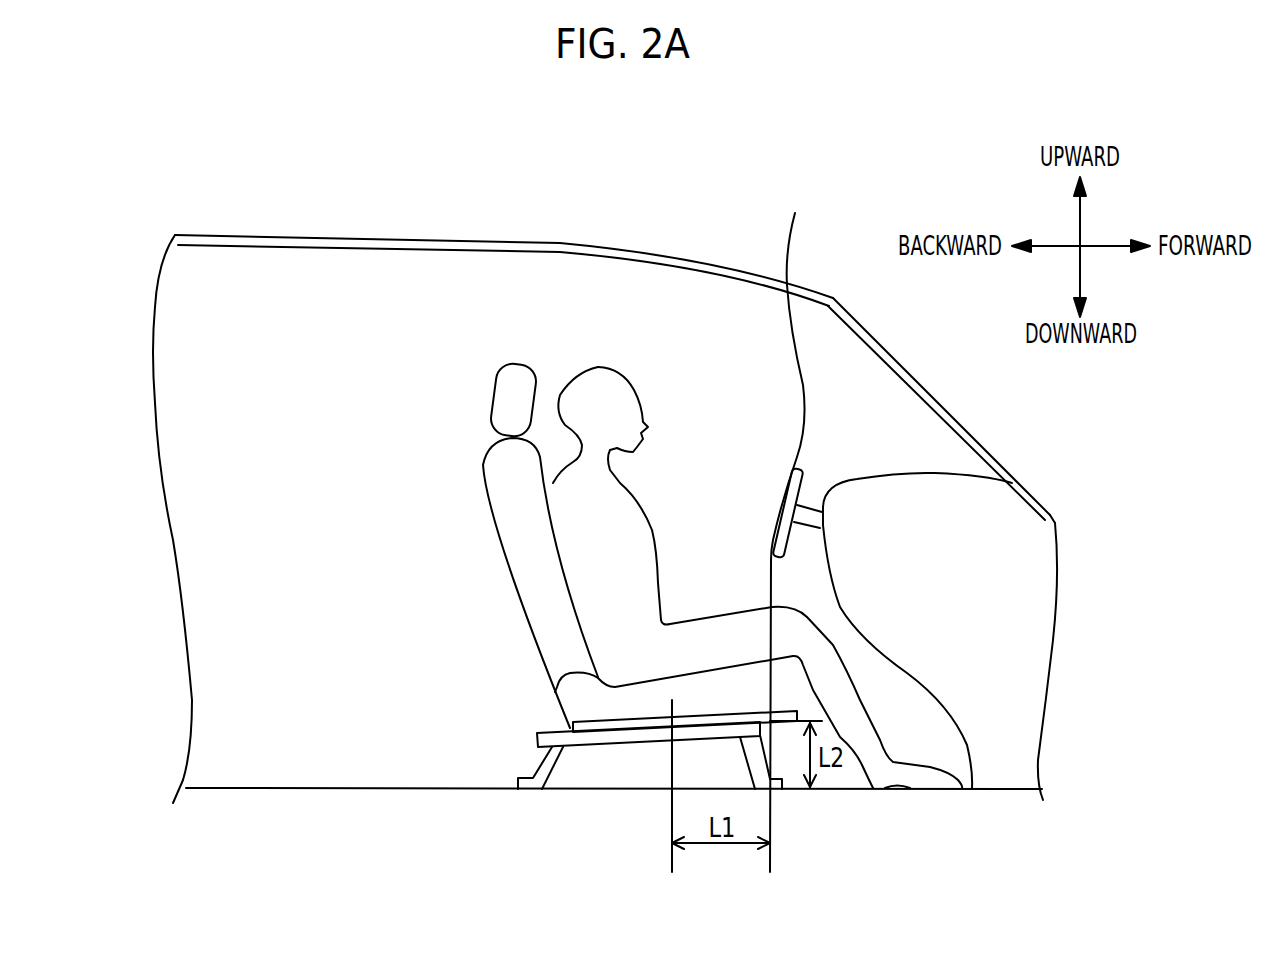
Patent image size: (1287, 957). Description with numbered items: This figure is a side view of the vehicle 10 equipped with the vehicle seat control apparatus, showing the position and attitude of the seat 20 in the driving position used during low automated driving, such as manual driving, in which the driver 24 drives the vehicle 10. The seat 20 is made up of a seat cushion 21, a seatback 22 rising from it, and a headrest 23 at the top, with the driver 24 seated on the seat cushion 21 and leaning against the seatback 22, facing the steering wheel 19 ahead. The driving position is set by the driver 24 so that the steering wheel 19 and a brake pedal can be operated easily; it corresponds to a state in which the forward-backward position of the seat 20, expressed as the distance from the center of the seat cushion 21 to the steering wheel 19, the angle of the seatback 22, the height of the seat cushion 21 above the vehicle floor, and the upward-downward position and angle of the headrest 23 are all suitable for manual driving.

The vehicle 10 is at (444, 207).
The steering wheel 19 is at (789, 529).
The seat 20 is at (573, 630).
The seat cushion 21 is at (607, 708).
The seatback 22 is at (503, 547).
The headrest 23 is at (490, 412).
The driver 24 is at (612, 367).